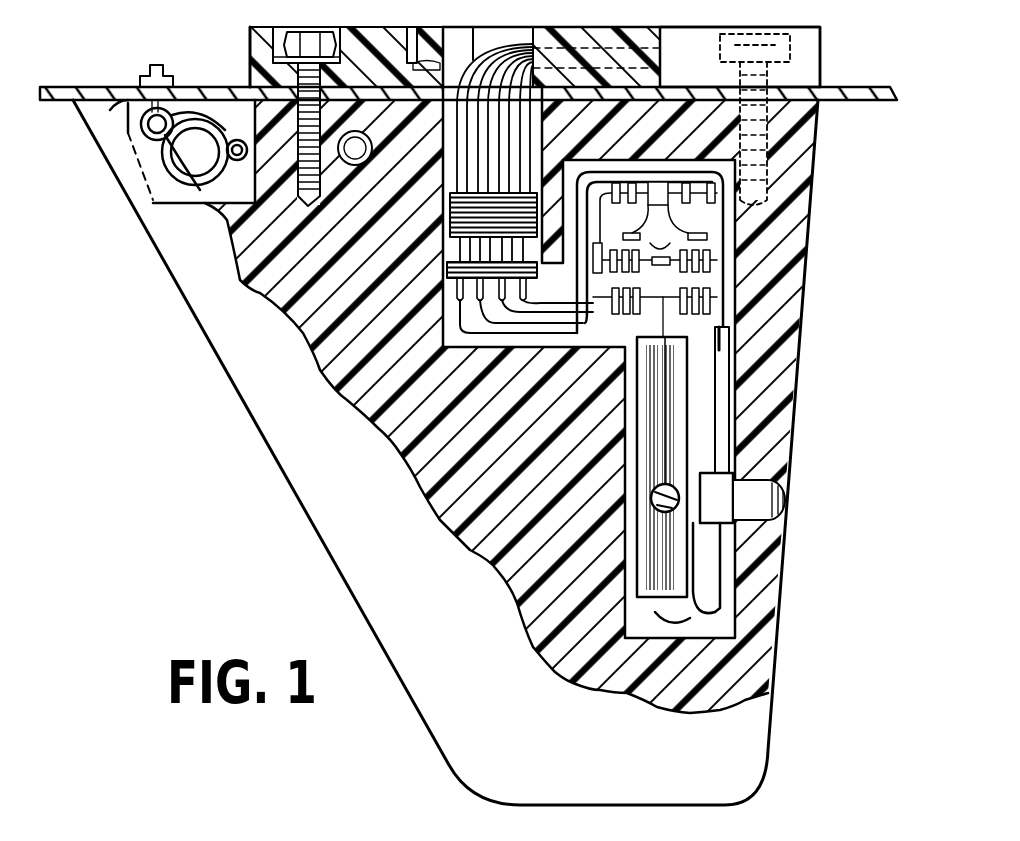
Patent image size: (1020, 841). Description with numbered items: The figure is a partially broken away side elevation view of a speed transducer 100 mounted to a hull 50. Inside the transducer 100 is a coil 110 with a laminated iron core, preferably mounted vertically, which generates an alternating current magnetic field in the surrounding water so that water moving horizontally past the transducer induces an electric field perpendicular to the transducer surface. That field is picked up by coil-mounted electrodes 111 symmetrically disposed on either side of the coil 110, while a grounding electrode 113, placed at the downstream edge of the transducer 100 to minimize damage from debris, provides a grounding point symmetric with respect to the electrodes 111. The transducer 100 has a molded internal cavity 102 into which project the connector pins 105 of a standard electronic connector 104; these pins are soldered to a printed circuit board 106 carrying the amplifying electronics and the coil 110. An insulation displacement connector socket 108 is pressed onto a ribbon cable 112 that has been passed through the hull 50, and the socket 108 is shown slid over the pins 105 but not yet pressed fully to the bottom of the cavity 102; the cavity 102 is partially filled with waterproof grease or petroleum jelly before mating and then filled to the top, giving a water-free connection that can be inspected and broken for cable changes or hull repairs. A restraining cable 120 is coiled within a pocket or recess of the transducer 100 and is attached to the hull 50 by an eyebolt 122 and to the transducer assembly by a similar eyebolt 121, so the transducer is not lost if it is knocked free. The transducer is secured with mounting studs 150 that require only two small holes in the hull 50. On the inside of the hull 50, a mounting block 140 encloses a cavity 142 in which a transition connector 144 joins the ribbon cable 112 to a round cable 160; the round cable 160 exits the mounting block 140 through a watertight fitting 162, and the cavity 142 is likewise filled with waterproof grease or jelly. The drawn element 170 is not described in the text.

The hull 50 is at (830, 92).
The transducer 100 is at (836, 660).
The internal cavity 102 is at (603, 43).
The electronic connector 104 is at (452, 292).
The connector pins 105 is at (455, 308).
The printed circuit board 106 is at (445, 338).
The insulation displacement connector socket 108 is at (447, 270).
The coil 110 is at (683, 407).
The coil-mounted electrodes 111 is at (680, 508).
The ribbon cable 112 is at (447, 225).
The grounding electrode 113 is at (788, 498).
The restraining cable 120 is at (175, 163).
The eyebolt 121 is at (193, 205).
The eyebolt 122 is at (143, 72).
The mounting block 140 is at (250, 60).
The cavity 142 is at (470, 45).
The transition connector 144 is at (510, 45).
The mounting studs 150 is at (295, 37).
The round cable 160 is at (662, 32).
The watertight fitting 162 is at (557, 36).
The mounting bracket 170 is at (252, 85).